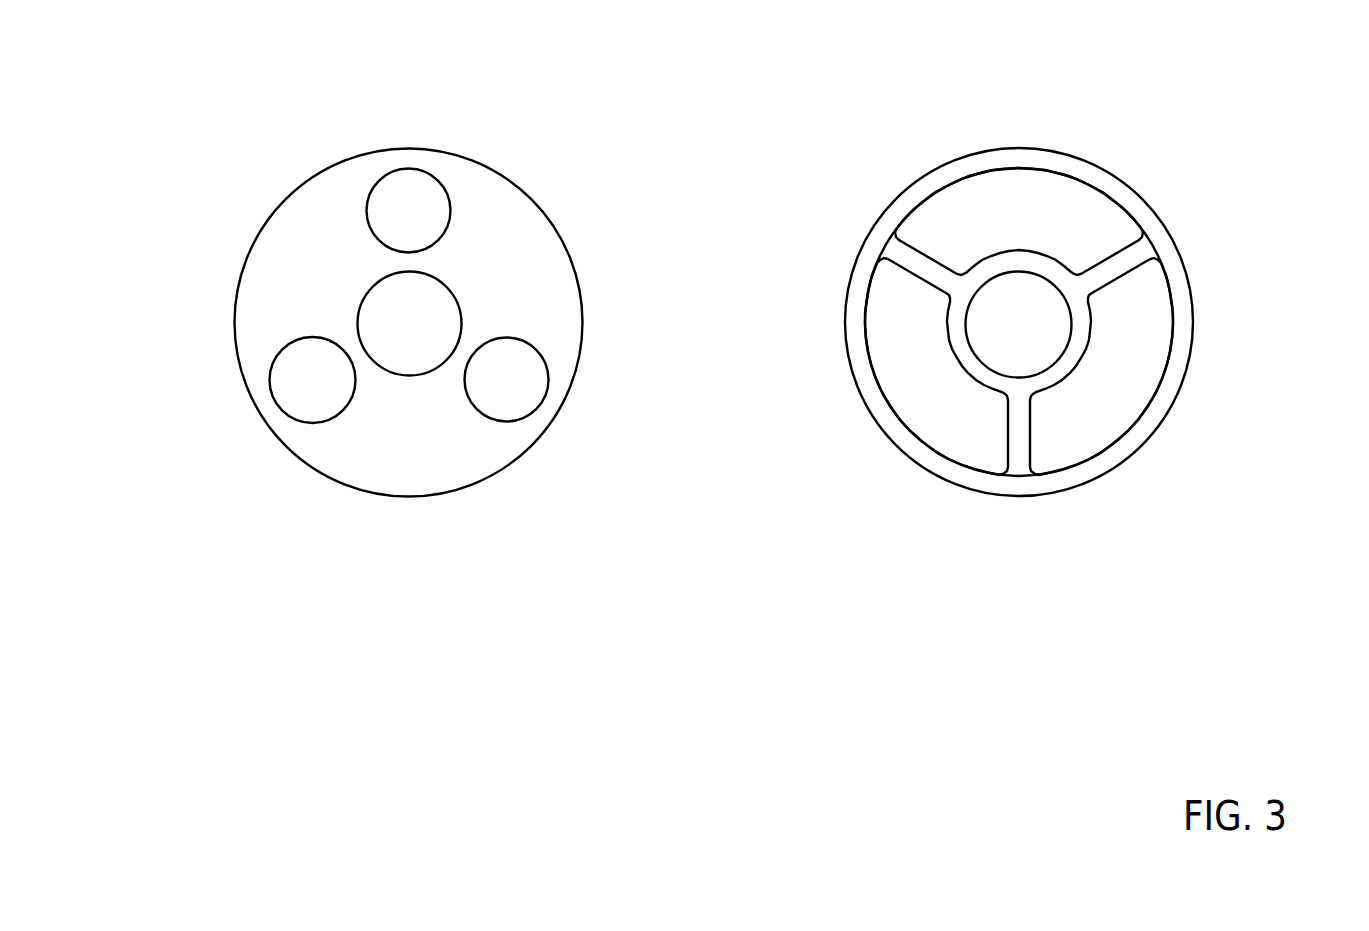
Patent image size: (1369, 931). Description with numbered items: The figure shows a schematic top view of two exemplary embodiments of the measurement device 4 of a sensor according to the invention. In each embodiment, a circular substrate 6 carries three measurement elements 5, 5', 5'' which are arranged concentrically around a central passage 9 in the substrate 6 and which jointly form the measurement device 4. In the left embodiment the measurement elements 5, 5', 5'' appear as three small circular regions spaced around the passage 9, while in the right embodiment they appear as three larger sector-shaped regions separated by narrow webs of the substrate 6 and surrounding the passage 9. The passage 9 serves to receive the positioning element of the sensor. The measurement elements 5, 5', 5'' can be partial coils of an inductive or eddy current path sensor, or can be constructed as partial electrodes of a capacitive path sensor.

The measurement device 4 is at (736, 298).
The measurement element 5 is at (819, 375).
The measurement element 5' is at (716, 168).
The measurement element 5'' is at (736, 397).
The substrate 6 is at (933, 170).
The passage 9 is at (993, 313).